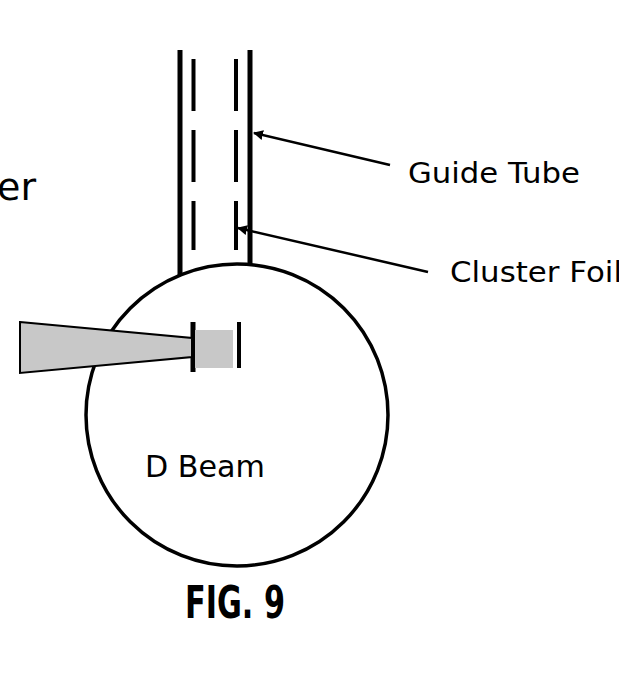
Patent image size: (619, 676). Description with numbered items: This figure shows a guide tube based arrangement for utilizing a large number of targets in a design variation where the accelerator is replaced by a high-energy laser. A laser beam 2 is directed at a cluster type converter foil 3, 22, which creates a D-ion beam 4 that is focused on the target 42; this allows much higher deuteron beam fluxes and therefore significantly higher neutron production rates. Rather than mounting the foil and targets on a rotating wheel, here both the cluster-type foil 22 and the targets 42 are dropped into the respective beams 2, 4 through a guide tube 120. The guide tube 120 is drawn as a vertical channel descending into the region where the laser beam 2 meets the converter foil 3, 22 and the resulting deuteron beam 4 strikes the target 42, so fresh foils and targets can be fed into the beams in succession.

The laser beam 2 is at (72, 322).
The cluster type converter foil 3 is at (228, 211).
The cluster-type foil 22 is at (228, 211).
The target 42 is at (238, 102).
The guide tube 120 is at (252, 195).
The D-ion beam 4 is at (210, 417).